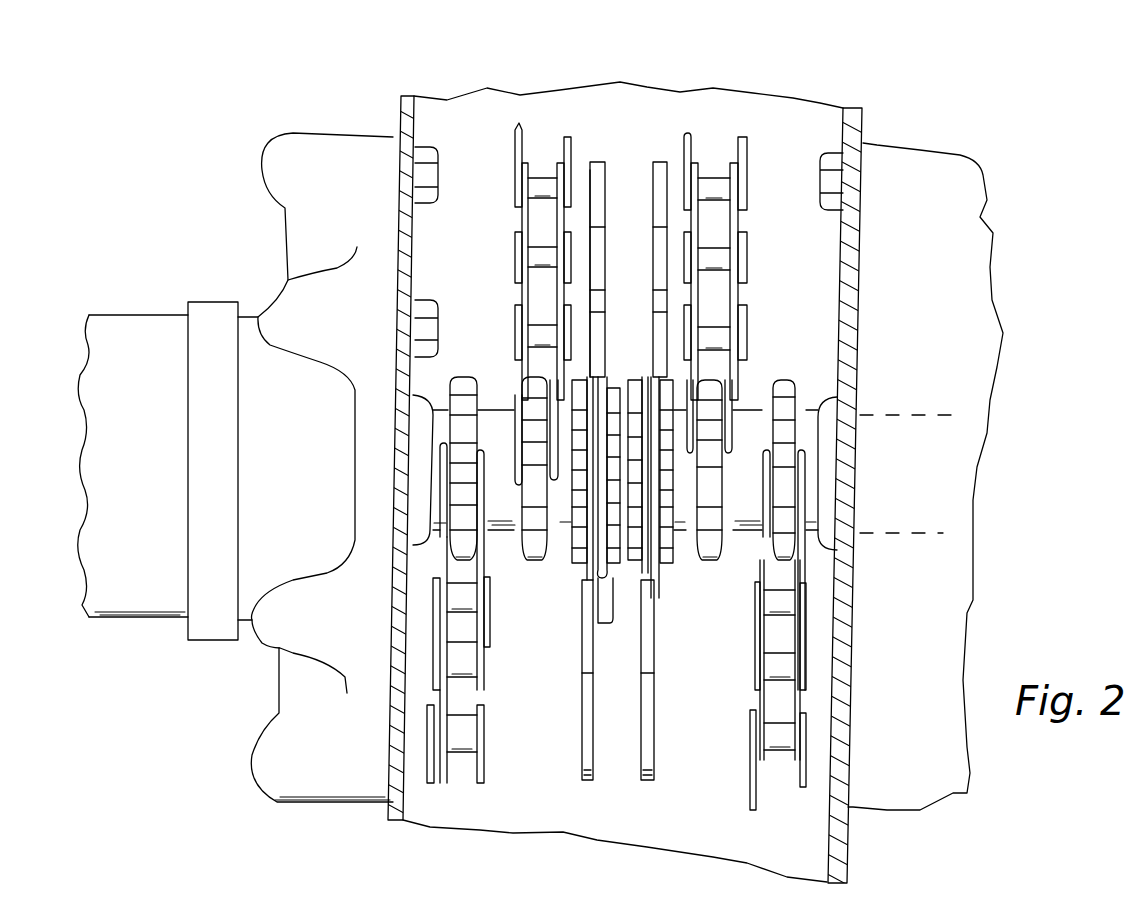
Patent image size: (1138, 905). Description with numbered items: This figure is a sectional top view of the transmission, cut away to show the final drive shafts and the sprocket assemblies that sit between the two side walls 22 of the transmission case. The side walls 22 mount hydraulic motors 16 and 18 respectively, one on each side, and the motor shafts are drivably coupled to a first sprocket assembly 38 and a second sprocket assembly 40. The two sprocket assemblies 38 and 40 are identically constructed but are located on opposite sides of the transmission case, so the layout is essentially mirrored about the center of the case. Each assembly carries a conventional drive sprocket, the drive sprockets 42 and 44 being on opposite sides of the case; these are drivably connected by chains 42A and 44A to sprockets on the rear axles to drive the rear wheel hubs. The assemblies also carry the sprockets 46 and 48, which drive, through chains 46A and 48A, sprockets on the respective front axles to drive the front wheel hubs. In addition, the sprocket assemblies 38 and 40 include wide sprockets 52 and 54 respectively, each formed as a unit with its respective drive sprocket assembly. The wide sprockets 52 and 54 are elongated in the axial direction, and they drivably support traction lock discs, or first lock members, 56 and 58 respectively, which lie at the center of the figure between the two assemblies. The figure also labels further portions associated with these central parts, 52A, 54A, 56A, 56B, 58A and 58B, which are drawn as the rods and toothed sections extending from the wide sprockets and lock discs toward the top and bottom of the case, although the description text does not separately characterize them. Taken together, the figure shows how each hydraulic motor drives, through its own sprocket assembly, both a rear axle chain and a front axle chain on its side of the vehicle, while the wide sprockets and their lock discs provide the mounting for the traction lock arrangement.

The hydraulic motor 16 is at (123, 333).
The hydraulic motor 18 is at (978, 322).
The side wall 22 is at (401, 104).
The first sprocket assembly 38 is at (494, 408).
The second sprocket assembly 40 is at (755, 410).
The drive sprocket 42 is at (468, 538).
The chain 42A is at (487, 778).
The drive sprocket 44 is at (787, 393).
The chain 44A is at (753, 752).
The sprocket 46 is at (540, 563).
The chain 46A is at (517, 185).
The sprocket 48 is at (723, 565).
The chain 48A is at (738, 215).
The wide sprocket 52 is at (580, 613).
The rod end 52A is at (580, 637).
The wide sprocket 54 is at (660, 597).
The rack 54A is at (632, 380).
The traction lock disc 56 is at (598, 162).
The bar portion 56A is at (590, 257).
The rack 56B is at (615, 388).
The traction lock disc 58 is at (663, 162).
The rack 58A is at (668, 290).
The rod 58B is at (640, 712).